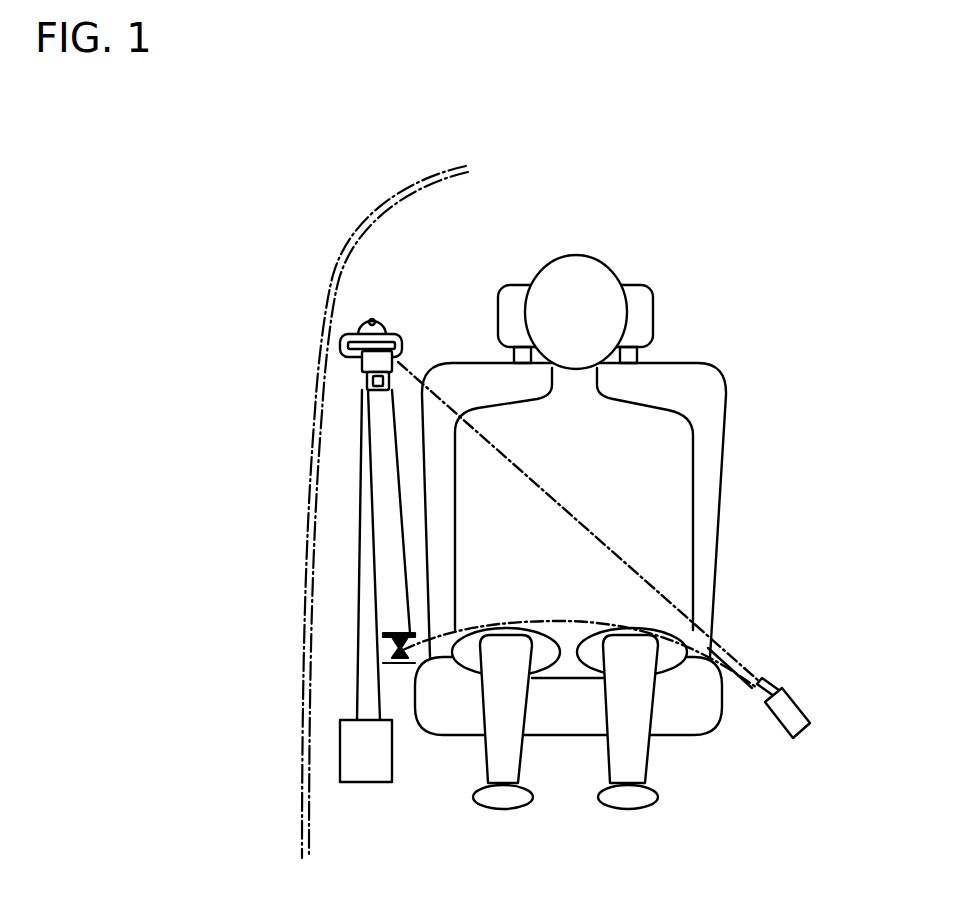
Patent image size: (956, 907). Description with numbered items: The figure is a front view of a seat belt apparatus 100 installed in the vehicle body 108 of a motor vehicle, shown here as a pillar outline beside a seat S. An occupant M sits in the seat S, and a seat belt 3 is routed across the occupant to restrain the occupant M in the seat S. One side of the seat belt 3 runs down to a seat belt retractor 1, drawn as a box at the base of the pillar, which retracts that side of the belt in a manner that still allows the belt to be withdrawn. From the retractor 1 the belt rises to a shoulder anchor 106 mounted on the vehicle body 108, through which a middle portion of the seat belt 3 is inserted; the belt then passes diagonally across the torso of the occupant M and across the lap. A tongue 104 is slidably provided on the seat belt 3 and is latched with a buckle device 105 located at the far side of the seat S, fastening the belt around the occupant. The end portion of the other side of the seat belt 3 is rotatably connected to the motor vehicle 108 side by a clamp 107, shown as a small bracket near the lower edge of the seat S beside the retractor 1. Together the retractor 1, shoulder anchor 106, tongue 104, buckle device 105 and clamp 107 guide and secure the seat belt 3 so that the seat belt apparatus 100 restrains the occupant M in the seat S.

The seat belt retractor 1 is at (354, 766).
The seat belt 3 is at (362, 676).
The seat belt apparatus 100 is at (348, 572).
The tongue 104 is at (362, 368).
The buckle device 105 is at (795, 716).
The shoulder anchor 106 is at (383, 327).
The clamp 107 is at (397, 665).
The vehicle body 108 is at (328, 279).
The occupant M is at (572, 255).
The seat S is at (728, 468).